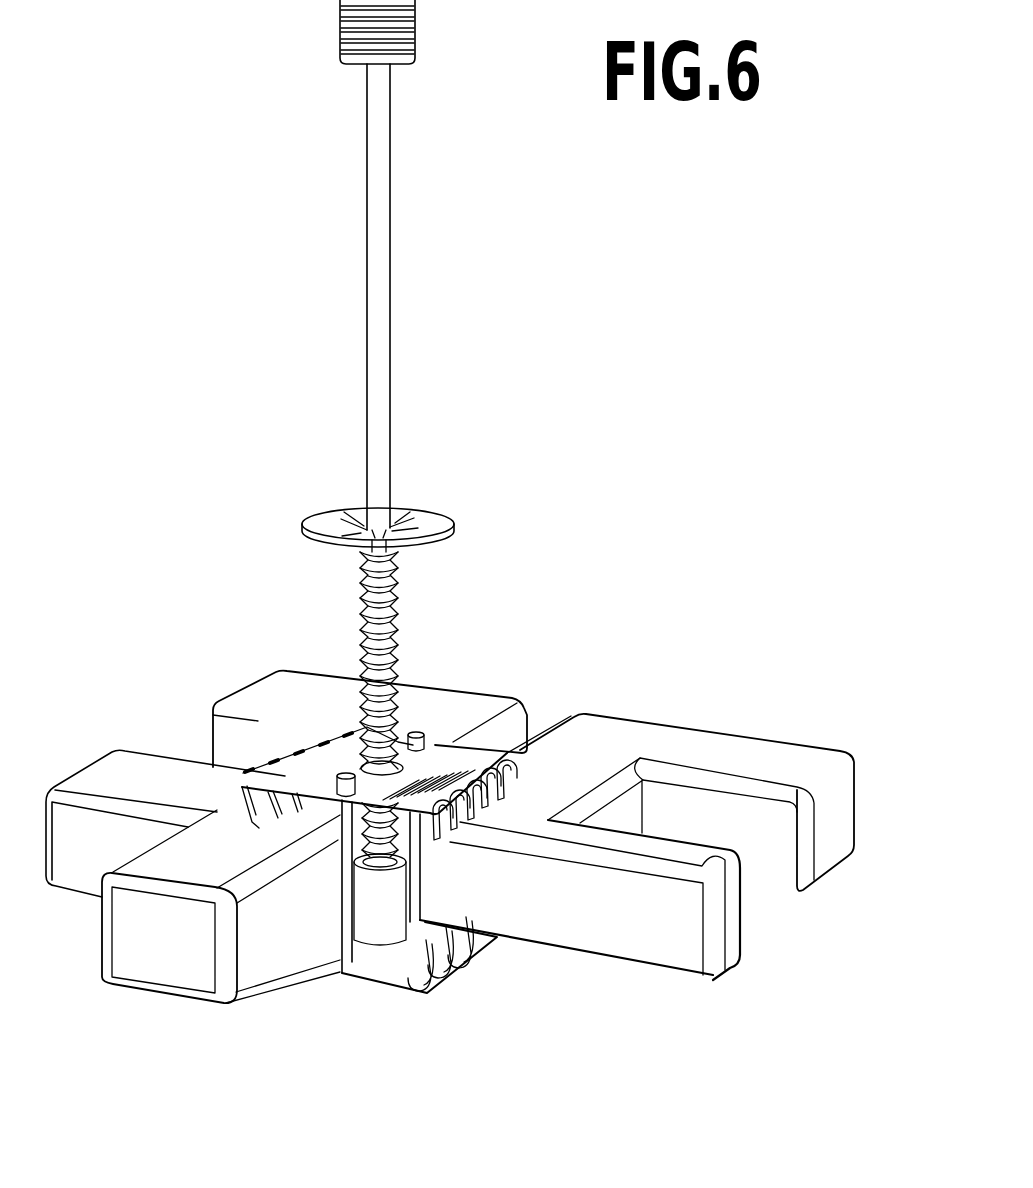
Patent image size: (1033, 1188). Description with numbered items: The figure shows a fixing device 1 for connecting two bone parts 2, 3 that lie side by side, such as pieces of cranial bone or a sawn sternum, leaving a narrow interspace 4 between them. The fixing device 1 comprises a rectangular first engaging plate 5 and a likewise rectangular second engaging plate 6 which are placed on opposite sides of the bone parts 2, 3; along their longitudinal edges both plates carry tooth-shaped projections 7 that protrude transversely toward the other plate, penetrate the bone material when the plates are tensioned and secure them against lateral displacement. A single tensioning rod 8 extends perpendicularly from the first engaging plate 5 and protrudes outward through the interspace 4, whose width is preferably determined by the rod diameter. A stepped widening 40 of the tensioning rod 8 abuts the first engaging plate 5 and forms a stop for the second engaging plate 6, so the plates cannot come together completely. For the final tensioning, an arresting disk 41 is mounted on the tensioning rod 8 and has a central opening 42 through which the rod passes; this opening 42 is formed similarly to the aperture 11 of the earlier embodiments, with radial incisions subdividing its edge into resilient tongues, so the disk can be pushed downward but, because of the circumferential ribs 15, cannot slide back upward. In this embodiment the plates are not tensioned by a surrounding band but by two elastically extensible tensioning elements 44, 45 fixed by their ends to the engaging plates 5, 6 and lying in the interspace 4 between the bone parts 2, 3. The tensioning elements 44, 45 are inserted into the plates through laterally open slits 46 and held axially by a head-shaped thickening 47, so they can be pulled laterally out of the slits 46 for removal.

The fixing device 1 is at (414, 678).
The bone part 2 is at (495, 708).
The bone part 3 is at (628, 728).
The interspace 4 is at (558, 722).
The first engaging plate 5 is at (373, 968).
The second engaging plate 6 is at (297, 768).
The tooth-shaped projections 7 is at (414, 985).
The tensioning rod 8 is at (389, 212).
The aperture 11 is at (346, 770).
The circumferential ribs 15 is at (365, 598).
The stepped widening 40 is at (358, 851).
The arresting disk 41 is at (428, 515).
The central opening 42 is at (376, 523).
The tensioning element 44 is at (348, 910).
The tensioning element 45 is at (418, 733).
The slits 46 is at (340, 800).
The head-shaped thickening 47 is at (297, 757).